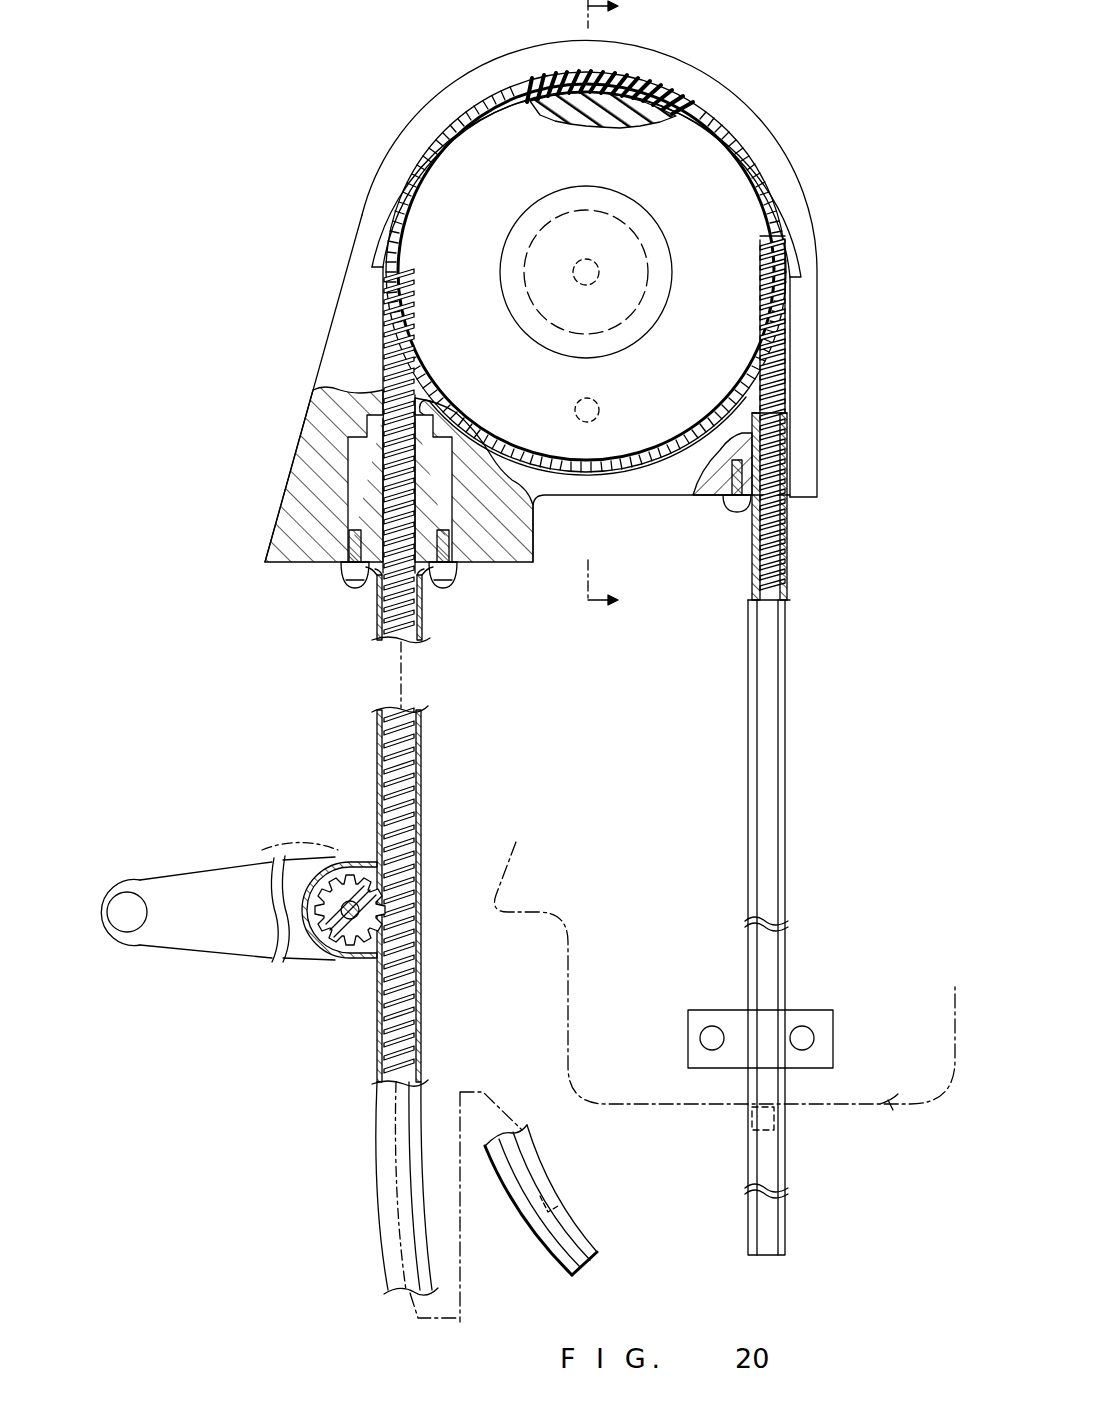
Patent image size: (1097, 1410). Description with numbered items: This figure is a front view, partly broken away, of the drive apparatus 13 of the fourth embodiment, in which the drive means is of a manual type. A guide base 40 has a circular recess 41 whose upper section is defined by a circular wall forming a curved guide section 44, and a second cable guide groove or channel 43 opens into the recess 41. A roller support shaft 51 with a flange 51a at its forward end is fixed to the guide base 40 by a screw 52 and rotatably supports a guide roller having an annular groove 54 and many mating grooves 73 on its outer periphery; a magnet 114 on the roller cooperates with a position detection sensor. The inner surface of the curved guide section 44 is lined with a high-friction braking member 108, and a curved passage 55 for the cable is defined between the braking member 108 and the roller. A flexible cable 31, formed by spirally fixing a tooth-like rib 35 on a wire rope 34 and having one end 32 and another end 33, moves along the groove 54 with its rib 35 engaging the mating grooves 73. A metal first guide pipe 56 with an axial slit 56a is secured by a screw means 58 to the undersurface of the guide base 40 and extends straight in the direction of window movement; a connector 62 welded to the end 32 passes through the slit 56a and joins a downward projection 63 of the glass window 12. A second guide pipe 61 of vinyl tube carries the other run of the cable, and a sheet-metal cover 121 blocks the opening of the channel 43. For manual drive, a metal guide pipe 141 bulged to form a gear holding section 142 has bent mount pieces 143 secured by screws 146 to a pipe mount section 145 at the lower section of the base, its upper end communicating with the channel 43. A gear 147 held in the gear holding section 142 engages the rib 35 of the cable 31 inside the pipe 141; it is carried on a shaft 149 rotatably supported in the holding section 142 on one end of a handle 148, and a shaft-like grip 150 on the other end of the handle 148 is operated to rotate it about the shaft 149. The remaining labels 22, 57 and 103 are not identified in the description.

The glass window 12 is at (510, 866).
The drive apparatus 13 is at (310, 266).
The section line 22 is at (623, 309).
The power transmission cable 31 is at (786, 330).
The one end 32 is at (776, 1125).
The another end 33 is at (545, 1190).
The wire rope 34 is at (781, 358).
The tooth-like rib 35 is at (781, 393).
The guide base 40 is at (634, 496).
The recess 41 is at (585, 480).
The second cable guide groove 43 is at (395, 487).
The curved guide section 44 is at (513, 62).
The roller support shaft 51 is at (640, 335).
The flange 51a is at (620, 320).
The screw 52 is at (600, 272).
The annular groove 54 is at (680, 97).
The curved passage 55 is at (710, 160).
The first guide pipe 56 is at (787, 835).
The slit 56a is at (768, 780).
The bracket 57 is at (718, 500).
The screw means 58 is at (735, 510).
The second guide pipe 61 is at (388, 1170).
The connector 62 is at (815, 1010).
The downward projection 63 is at (893, 1108).
The mating grooves 73 is at (587, 115).
The cable sheath 103 is at (781, 447).
The braking member 108 is at (462, 102).
The magnet 114 is at (600, 410).
The cover 121 is at (330, 455).
The guide pipe 141 is at (420, 745).
The gear holding section 142 is at (318, 955).
The bent mount pieces 143 is at (463, 568).
The pipe mount section 145 is at (305, 540).
The screws 146 is at (446, 582).
The gear 147 is at (330, 860).
The handle 148 is at (222, 882).
The shaft 149 is at (340, 970).
The shaft-like grip 150 is at (133, 930).